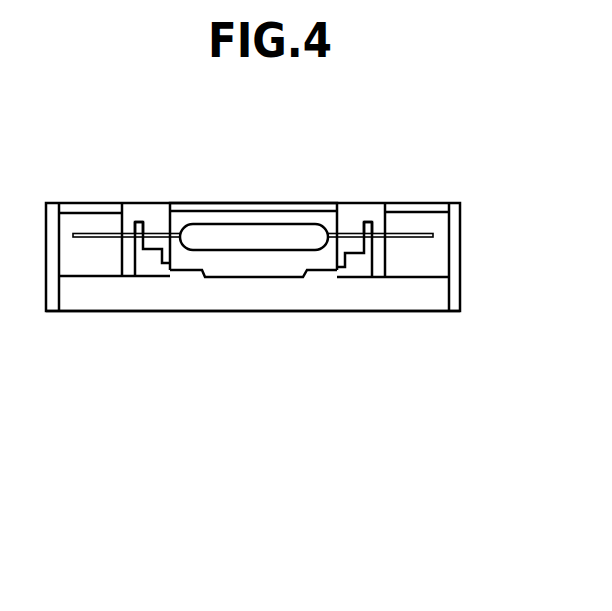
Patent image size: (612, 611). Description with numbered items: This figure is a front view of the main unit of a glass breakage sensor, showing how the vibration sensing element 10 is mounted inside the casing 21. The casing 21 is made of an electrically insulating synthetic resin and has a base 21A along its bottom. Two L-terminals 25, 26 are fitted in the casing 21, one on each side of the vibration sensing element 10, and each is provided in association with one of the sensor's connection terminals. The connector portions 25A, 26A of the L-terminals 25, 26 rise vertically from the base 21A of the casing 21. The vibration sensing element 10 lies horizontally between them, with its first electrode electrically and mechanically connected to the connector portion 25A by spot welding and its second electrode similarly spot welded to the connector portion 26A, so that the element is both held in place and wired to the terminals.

The vibration sensing element 10 is at (251, 232).
The casing 21 is at (467, 208).
The base 21A is at (431, 294).
The L-terminal 25 is at (146, 250).
The connector portion 25A is at (141, 220).
The L-terminal 26 is at (357, 265).
The connector portion 26A is at (365, 221).